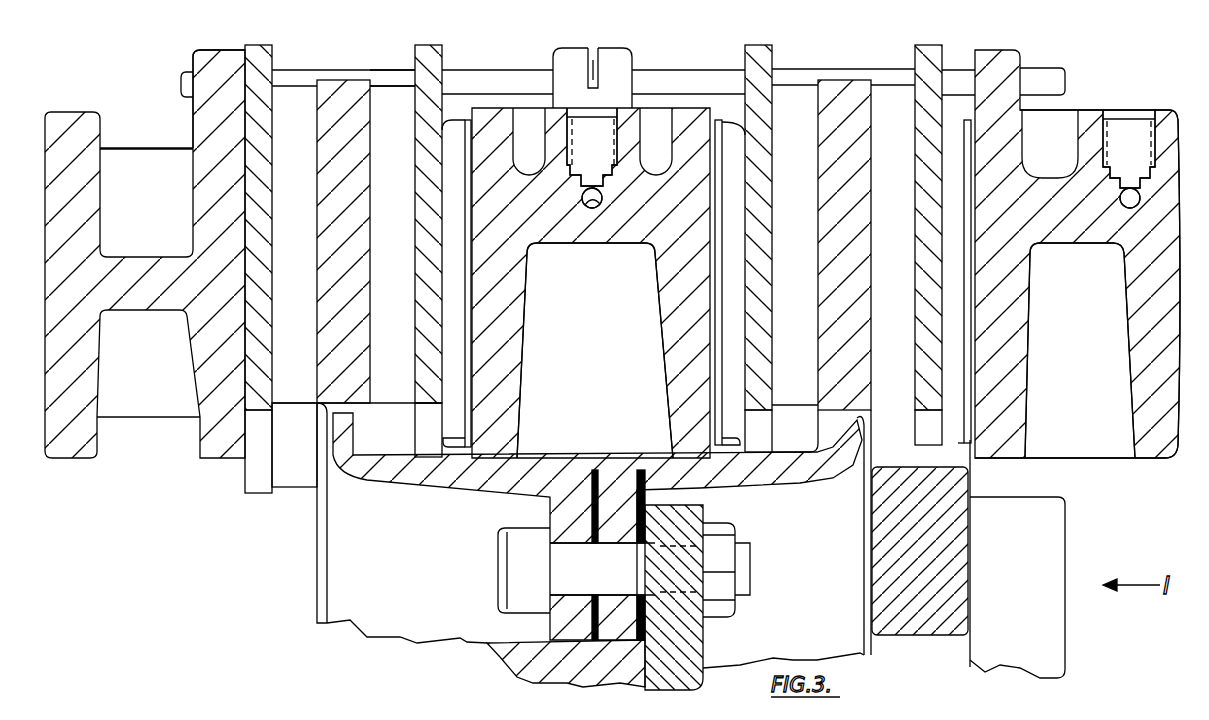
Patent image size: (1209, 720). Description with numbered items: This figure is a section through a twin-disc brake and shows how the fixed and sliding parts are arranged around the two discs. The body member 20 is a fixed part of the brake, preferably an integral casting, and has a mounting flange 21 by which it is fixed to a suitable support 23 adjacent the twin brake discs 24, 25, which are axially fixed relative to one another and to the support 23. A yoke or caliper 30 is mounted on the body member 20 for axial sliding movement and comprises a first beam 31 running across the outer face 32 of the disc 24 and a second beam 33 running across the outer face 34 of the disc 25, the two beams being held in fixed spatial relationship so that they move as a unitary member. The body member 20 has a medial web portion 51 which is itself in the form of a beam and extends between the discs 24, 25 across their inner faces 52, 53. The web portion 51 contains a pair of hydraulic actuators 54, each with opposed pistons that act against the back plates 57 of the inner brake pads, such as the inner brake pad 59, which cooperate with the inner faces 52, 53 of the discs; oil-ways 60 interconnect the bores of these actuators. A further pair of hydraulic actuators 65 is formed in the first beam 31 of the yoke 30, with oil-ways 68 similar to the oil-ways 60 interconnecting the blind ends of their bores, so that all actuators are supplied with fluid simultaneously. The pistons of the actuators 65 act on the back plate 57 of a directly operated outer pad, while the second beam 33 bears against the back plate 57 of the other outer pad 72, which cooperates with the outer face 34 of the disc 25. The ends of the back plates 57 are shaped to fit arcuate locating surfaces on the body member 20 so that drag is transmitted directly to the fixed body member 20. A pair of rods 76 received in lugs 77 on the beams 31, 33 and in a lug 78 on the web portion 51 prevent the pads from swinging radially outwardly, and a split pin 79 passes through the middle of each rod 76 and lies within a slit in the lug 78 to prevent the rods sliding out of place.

The body member 20 is at (698, 108).
The mounting flange 21 is at (972, 555).
The support 23 is at (1065, 560).
The brake disc 24 is at (843, 80).
The brake disc 25 is at (350, 80).
The yoke or caliper 30 is at (243, 49).
The first beam 31 is at (1178, 275).
The outer face 32 is at (873, 126).
The second beam 33 is at (45, 170).
The outer face 34 is at (315, 88).
The medial web portion 51 is at (565, 243).
The inner face 52 is at (815, 130).
The inner face 53 is at (378, 86).
The hydraulic actuator 54 is at (605, 369).
The back plate 57 is at (265, 45).
The inner brake pad 59 is at (400, 226).
The oil-way 60 is at (600, 213).
The hydraulic actuator 65 is at (1077, 337).
The oil-way 68 is at (1130, 190).
The outer pad 72 is at (304, 189).
The rod 76 is at (528, 70).
The lug 77 is at (215, 50).
The lug 78 is at (631, 52).
The split pin 79 is at (592, 56).